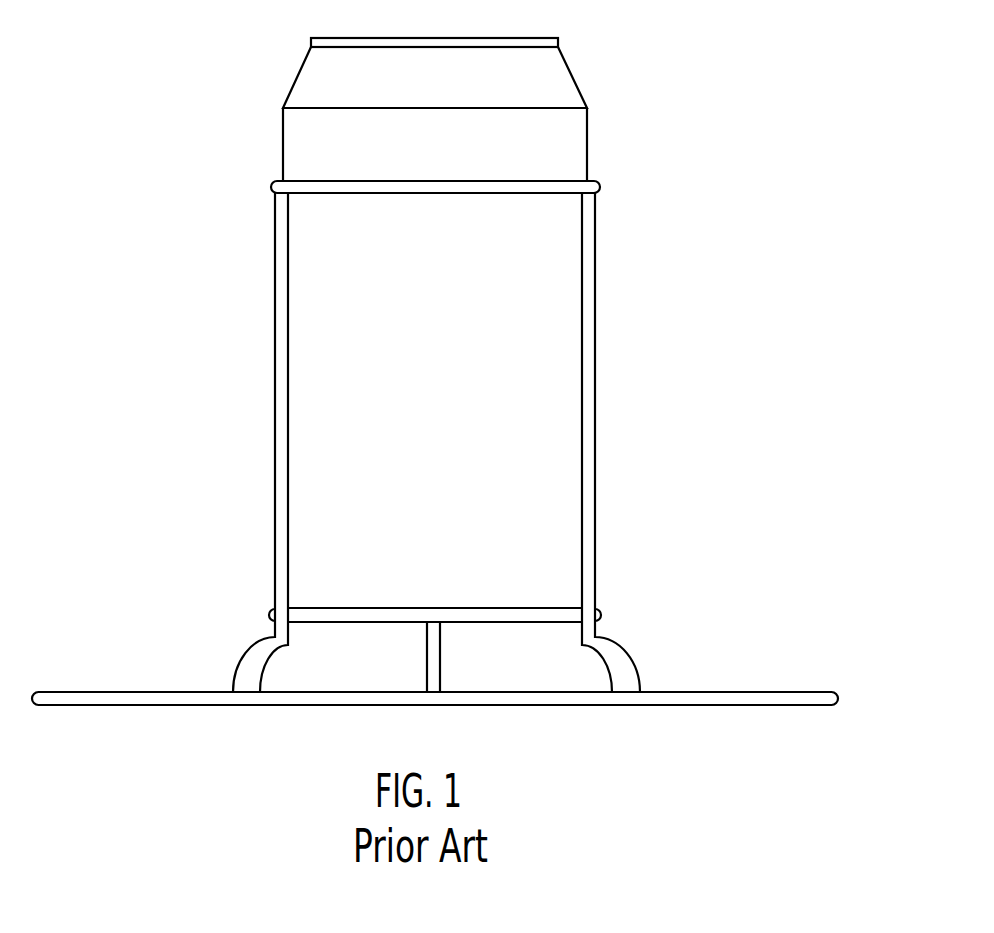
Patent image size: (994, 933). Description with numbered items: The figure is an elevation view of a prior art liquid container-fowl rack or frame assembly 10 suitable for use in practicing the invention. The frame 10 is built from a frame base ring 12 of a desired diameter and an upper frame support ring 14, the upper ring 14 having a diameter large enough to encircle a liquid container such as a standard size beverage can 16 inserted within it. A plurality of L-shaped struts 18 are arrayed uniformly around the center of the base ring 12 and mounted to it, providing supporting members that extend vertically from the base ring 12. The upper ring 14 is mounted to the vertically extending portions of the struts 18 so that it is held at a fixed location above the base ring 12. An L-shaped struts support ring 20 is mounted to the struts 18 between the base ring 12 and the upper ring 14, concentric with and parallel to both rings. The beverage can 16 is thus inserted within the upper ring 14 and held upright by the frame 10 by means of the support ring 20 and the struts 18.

The liquid container-fowl rack or frame assembly 10 is at (186, 446).
The frame base ring 12 is at (717, 692).
The upper frame support ring 14 is at (303, 180).
The beverage can 16 is at (551, 77).
The L-shaped struts 18 is at (275, 345).
The L-shaped struts support ring 20 is at (315, 608).